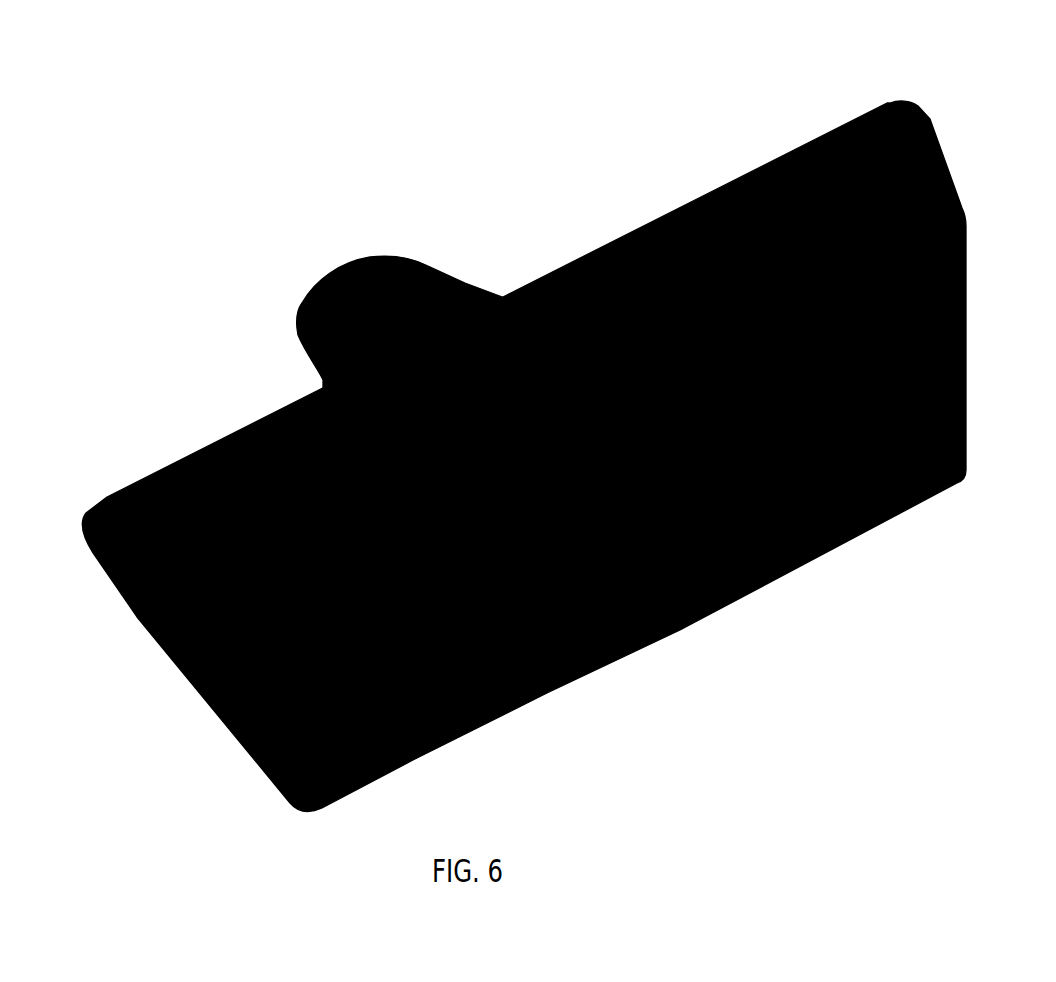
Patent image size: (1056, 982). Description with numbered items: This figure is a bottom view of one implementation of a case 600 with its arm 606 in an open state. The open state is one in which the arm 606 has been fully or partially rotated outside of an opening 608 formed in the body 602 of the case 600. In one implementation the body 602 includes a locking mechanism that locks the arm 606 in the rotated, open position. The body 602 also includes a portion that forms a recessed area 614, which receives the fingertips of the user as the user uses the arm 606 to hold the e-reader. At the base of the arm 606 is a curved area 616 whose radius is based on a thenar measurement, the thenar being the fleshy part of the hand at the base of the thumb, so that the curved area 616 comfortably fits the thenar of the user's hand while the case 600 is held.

The case 600 is at (555, 417).
The body 602 is at (117, 487).
The arm 606 is at (477, 308).
The opening 608 is at (589, 308).
The recessed area 614 is at (352, 637).
The curved area 616 is at (322, 375).